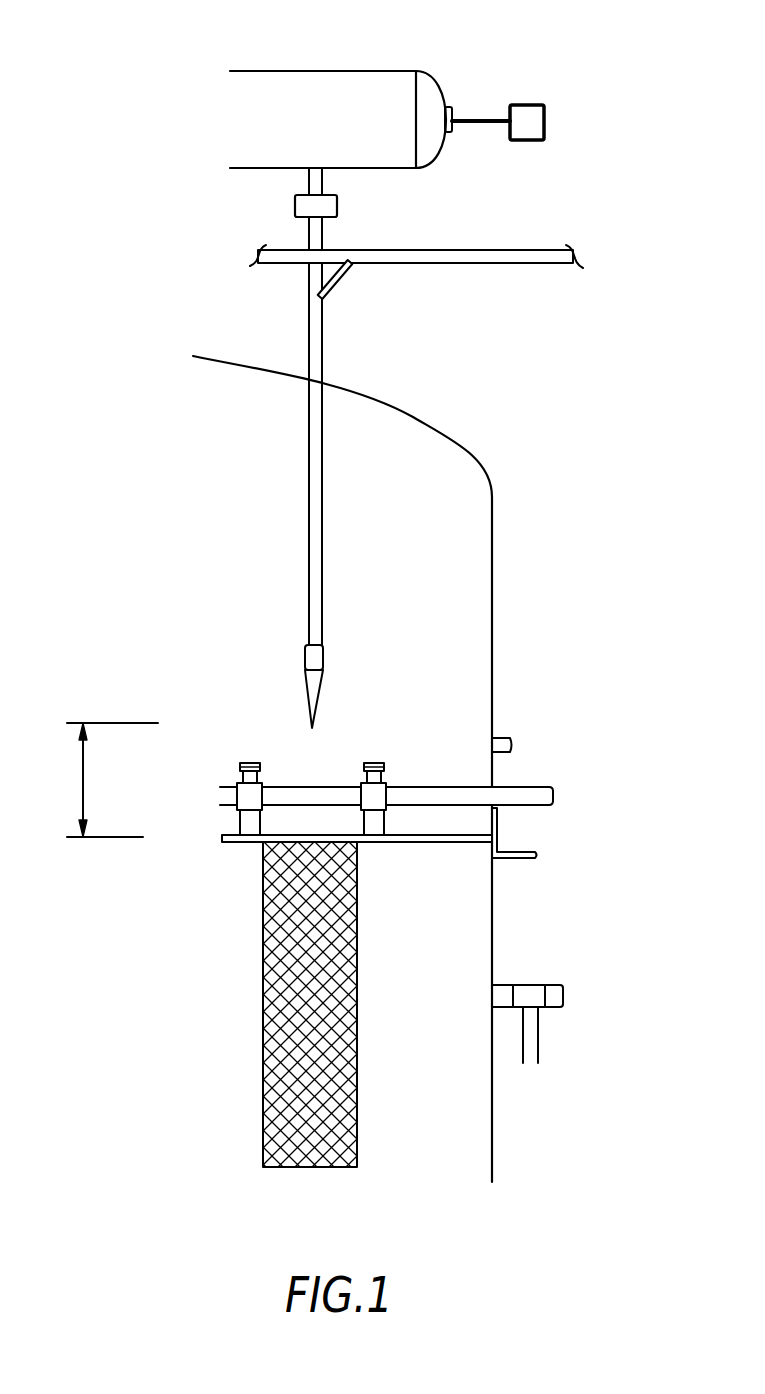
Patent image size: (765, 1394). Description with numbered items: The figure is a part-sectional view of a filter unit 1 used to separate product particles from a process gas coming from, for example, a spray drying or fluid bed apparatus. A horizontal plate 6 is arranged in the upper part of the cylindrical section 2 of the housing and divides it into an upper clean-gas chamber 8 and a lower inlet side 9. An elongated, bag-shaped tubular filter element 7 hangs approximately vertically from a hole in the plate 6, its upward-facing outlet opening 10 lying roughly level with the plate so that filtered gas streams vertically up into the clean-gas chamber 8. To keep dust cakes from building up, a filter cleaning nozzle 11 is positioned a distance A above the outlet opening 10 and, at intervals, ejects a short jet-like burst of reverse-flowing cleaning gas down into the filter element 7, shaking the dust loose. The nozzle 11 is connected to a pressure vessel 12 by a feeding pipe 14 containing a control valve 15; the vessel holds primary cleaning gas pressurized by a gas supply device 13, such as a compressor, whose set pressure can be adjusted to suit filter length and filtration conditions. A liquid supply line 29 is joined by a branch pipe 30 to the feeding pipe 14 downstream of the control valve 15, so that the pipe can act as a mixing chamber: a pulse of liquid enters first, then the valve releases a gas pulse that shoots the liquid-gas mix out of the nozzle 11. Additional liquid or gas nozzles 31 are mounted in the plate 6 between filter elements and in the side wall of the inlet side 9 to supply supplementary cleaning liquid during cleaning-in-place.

The filter unit 1 is at (409, 769).
The cylindrical section 2 is at (495, 890).
The horizontal plate 6 is at (420, 845).
The tubular filter element 7 is at (275, 1035).
The clean-gas chamber 8 is at (450, 478).
The inlet side 9 is at (465, 1112).
The outlet opening 10 is at (310, 838).
The filter cleaning nozzle 11 is at (276, 658).
The pressure vessel 12 is at (362, 82).
The gas supply device 13 is at (544, 118).
The feeding pipe 14 is at (309, 437).
The control valve 15 is at (297, 210).
The liquid supply line 29 is at (472, 250).
The branch pipe 30 is at (337, 273).
The liquid or gas nozzle 31 is at (370, 825).
The distance A is at (82, 782).